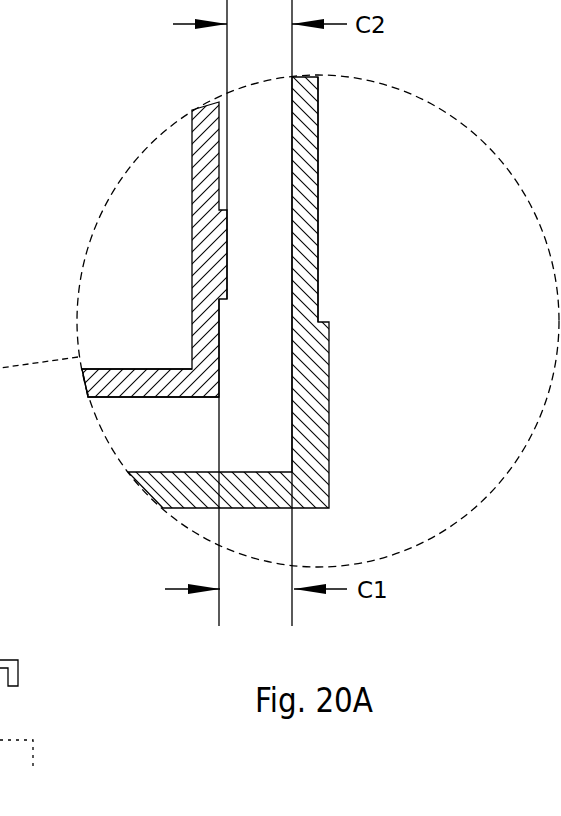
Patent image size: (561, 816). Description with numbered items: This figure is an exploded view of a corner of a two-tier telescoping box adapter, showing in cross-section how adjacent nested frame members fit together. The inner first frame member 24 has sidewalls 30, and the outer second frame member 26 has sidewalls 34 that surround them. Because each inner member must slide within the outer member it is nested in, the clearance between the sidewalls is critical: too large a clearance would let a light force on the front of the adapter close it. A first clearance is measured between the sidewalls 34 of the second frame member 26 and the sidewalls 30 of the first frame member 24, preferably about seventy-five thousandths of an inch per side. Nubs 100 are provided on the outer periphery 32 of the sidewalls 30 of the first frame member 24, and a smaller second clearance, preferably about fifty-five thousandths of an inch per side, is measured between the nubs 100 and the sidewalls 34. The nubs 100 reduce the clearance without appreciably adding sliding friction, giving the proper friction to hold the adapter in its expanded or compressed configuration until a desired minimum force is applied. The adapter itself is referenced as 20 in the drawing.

The assembly 20 is at (32, 768).
The first frame member 24 is at (192, 160).
The second frame member 26 is at (318, 172).
The sidewalls of the first frame member 30 is at (192, 334).
The outer periphery 32 is at (238, 356).
The sidewalls of the second frame member 34 is at (307, 223).
The nubs 100 is at (228, 255).